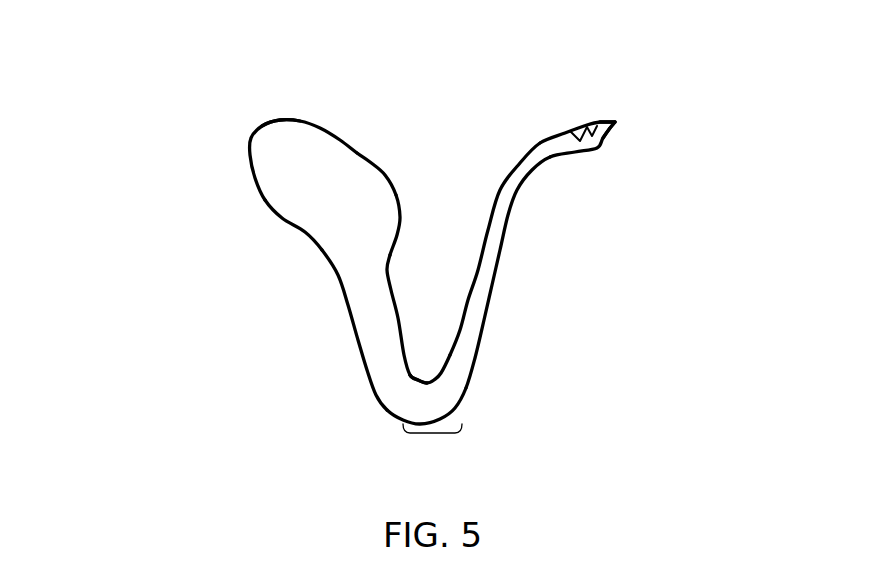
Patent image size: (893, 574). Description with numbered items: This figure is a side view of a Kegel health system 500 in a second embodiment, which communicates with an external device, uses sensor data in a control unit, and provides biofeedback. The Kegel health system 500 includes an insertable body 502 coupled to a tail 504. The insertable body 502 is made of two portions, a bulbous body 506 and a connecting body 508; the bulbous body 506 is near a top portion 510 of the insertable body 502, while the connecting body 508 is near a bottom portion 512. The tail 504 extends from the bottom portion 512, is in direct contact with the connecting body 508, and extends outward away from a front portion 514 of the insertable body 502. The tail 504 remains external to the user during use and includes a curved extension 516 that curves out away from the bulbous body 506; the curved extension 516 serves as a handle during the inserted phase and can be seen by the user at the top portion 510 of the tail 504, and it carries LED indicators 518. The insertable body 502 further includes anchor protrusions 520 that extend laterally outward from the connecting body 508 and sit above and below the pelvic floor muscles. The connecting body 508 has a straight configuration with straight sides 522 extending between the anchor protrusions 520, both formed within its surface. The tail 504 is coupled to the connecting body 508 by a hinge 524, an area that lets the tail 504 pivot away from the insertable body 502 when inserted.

The Kegel health system 500 is at (168, 31).
The insertable body 502 is at (210, 215).
The tail 504 is at (493, 238).
The bulbous body 506 is at (285, 150).
The connecting body 508 is at (373, 348).
The top portion 510 is at (254, 107).
The bottom portion 512 is at (477, 423).
The front portion 514 is at (392, 168).
The curved extension 516 is at (588, 162).
The LED indicators 518 is at (613, 124).
The anchor protrusions 520 is at (310, 236).
The straight sides 522 is at (402, 320).
The hinge 524 is at (433, 433).